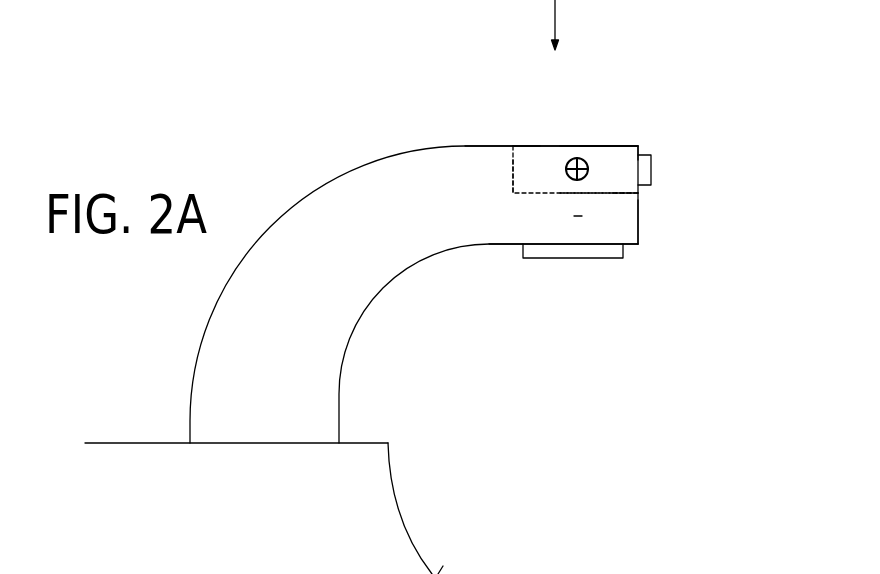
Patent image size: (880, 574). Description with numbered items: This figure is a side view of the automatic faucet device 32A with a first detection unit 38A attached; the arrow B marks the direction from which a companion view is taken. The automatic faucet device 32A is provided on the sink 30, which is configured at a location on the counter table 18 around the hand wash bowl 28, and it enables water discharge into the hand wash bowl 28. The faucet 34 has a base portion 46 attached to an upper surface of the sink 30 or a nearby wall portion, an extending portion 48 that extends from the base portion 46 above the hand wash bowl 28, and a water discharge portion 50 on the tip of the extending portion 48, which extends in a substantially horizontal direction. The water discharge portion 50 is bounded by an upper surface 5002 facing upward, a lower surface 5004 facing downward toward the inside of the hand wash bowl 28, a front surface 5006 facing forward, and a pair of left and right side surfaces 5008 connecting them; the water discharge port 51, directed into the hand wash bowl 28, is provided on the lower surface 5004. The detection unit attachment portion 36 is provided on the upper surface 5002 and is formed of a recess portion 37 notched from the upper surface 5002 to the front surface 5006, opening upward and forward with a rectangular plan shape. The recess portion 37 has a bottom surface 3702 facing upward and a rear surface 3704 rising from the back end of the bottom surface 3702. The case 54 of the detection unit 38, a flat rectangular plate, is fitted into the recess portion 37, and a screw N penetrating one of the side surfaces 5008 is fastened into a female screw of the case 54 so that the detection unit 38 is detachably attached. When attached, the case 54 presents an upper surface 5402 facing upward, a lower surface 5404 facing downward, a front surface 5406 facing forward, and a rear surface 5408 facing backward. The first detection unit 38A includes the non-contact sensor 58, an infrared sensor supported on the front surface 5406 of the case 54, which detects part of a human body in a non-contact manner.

The automatic faucet device 32A is at (387, 31).
The faucet 34 is at (414, 263).
The extending portion 48 is at (311, 205).
The base portion 46 is at (340, 417).
The water discharge portion 50 is at (610, 185).
The upper surface 5002 is at (497, 145).
The lower surface 5004 is at (513, 245).
The front surface 5006 is at (638, 217).
The side surfaces 5008 is at (578, 218).
The water discharge port 51 is at (607, 258).
The recess portion 37 is at (575, 139).
The detection unit attachment portion 36 is at (536, 188).
The rear surface 5408 is at (513, 176).
The lower surface 5404 is at (588, 193).
The rear surface 3704 is at (528, 152).
The upper surface 5402 is at (582, 145).
The bottom surface 3702 is at (613, 193).
The screw N is at (573, 184).
The front surface 5406 is at (690, 170).
The non-contact sensor 58 is at (652, 177).
The first detection unit 38A is at (686, 104).
The detection unit 38 is at (686, 104).
The case 54 is at (605, 142).
The arrow B is at (566, 25).
The sink 30 is at (236, 396).
The counter table 18 is at (128, 442).
The hand wash bowl 28 is at (401, 518).